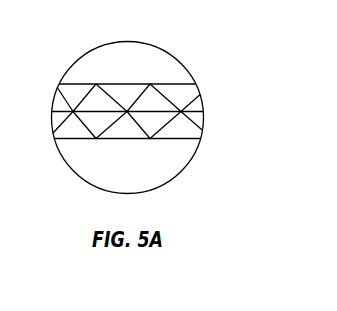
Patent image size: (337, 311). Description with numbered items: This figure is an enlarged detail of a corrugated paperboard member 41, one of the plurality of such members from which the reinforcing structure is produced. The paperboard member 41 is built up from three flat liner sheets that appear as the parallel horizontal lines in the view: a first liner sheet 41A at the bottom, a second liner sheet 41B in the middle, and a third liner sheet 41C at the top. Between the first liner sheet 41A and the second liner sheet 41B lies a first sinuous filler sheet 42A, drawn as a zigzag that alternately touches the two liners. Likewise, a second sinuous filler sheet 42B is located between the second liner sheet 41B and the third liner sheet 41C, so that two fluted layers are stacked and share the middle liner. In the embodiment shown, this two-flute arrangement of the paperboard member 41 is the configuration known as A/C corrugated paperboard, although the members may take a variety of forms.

The corrugated paperboard member 41 is at (129, 104).
The first liner sheet 41A is at (127, 139).
The second liner sheet 41B is at (182, 98).
The third liner sheet 41C is at (83, 83).
The first sinuous filler sheet 42A is at (162, 128).
The second sinuous filler sheet 42B is at (86, 92).